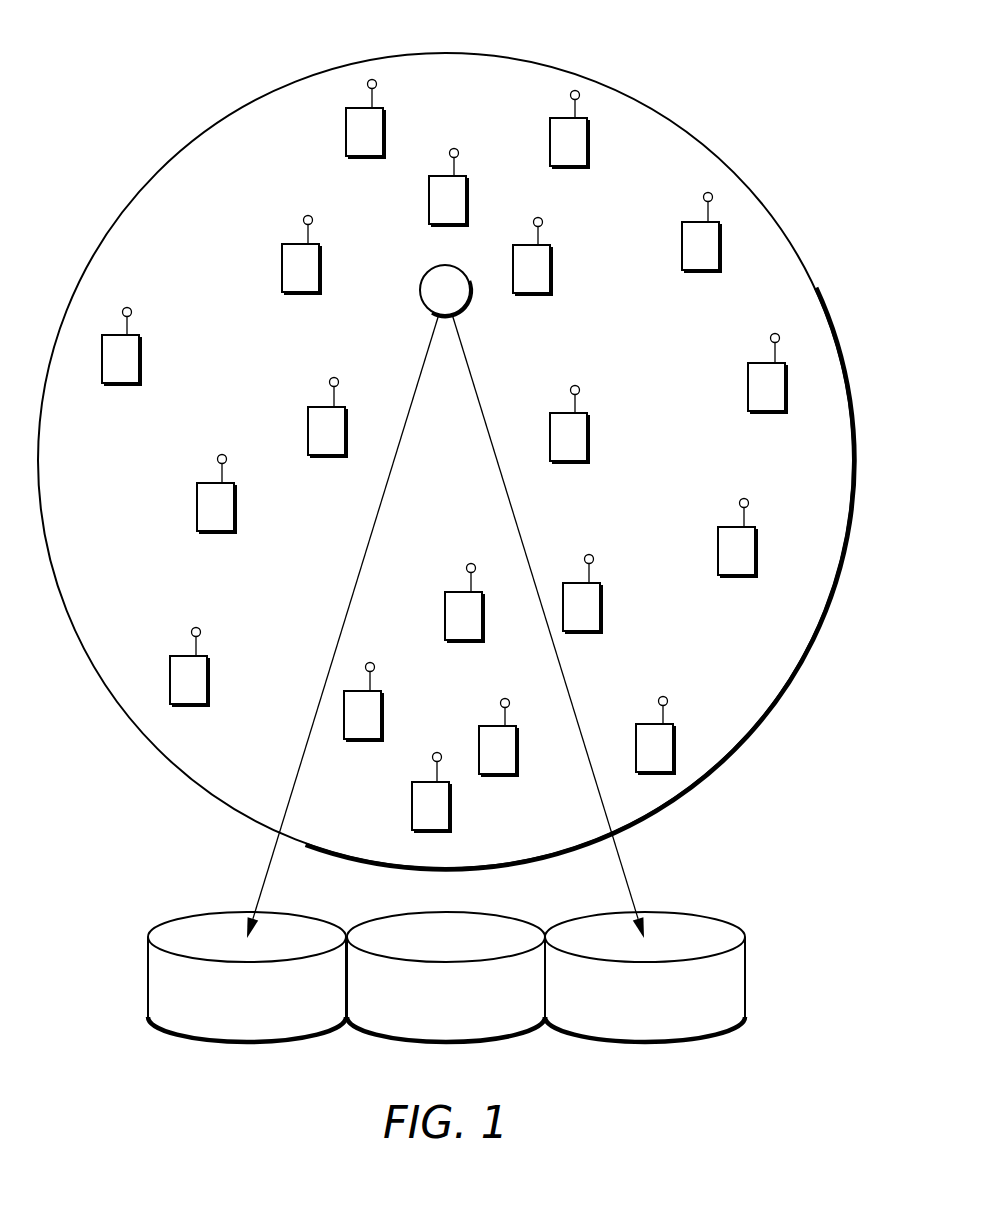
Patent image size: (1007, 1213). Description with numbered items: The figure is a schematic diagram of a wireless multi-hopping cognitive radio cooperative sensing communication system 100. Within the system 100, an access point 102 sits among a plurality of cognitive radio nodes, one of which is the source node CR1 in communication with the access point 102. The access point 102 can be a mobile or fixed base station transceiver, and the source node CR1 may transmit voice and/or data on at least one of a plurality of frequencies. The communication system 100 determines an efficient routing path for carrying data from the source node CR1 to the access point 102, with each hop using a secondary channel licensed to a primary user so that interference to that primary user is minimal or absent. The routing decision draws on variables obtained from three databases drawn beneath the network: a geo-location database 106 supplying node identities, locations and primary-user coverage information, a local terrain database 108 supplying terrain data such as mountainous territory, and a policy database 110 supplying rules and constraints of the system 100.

The wireless multi-hopping cognitive radio cooperative sensing communication system 100 is at (735, 39).
The access point 102 is at (420, 290).
The geo-location database 106 is at (190, 914).
The local terrain database 108 is at (390, 914).
The policy database 110 is at (588, 915).
The source node CR1 is at (518, 760).